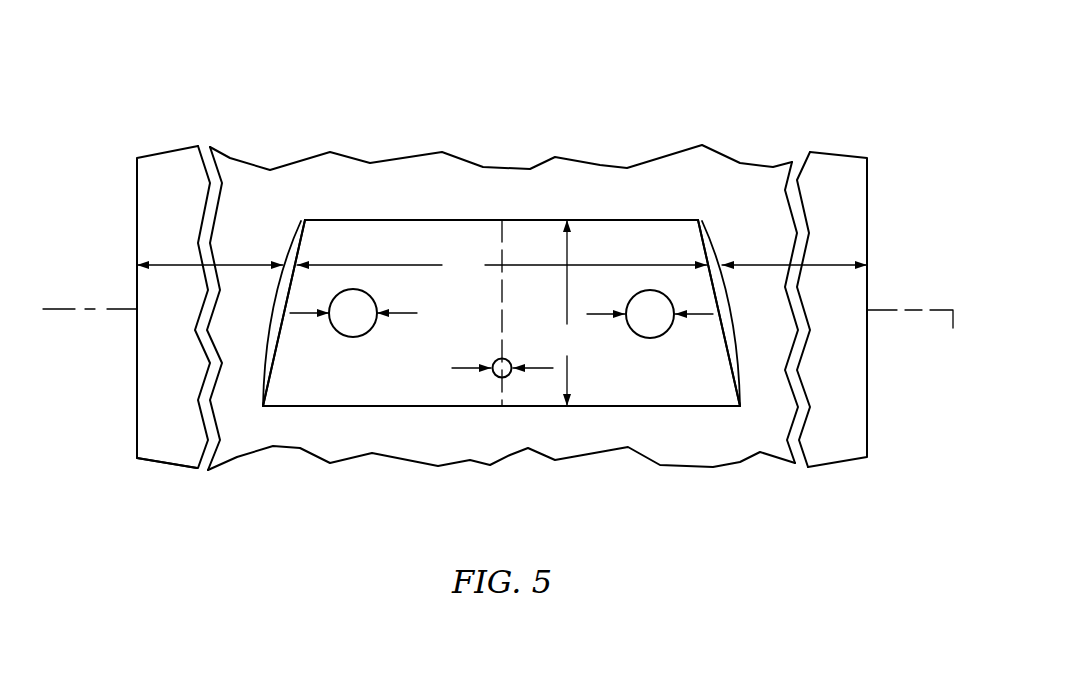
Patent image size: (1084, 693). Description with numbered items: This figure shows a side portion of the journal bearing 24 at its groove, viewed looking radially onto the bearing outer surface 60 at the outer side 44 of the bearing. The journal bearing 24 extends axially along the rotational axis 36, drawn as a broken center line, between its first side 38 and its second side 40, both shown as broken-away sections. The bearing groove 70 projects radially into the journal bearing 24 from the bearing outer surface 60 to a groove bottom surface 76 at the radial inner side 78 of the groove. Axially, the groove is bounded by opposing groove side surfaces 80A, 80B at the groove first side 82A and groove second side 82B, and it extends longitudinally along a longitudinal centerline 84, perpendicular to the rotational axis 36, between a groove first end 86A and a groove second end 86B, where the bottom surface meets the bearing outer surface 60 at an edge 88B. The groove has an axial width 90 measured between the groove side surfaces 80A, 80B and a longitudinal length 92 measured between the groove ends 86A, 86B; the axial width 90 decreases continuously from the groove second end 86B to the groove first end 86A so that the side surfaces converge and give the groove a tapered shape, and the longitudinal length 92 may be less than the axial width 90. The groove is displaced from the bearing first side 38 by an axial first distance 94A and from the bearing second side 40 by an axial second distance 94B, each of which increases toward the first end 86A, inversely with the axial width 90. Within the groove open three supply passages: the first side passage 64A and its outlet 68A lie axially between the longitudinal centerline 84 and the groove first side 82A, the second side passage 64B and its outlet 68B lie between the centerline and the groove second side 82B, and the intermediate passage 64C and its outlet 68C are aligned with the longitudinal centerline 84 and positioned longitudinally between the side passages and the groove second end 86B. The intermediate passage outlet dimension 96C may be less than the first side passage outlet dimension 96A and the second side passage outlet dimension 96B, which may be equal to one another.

The journal bearing 24 is at (840, 110).
The rotational axis 36 is at (953, 336).
The first side of the journal bearing 38 is at (137, 433).
The second side of the journal bearing 40 is at (867, 434).
The outer side of the journal bearing 44 is at (163, 489).
The bearing outer surface 60 is at (169, 450).
The first side passage 64A is at (330, 343).
The second side passage 64B is at (683, 372).
The intermediate passage 64C is at (457, 405).
The first side passage outlet 68A is at (353, 337).
The second side passage outlet 68B is at (655, 338).
The intermediate passage outlet 68C is at (493, 375).
The bearing groove 70 is at (647, 236).
The groove bottom surface 76 is at (501, 202).
The radial inner side of the bearing groove 78 is at (412, 245).
The groove side surface 80A is at (282, 255).
The groove side surface 80B is at (737, 293).
The groove first side 82A is at (292, 262).
The groove second side 82B is at (716, 260).
The longitudinal centerline 84 is at (500, 326).
The groove first end 86A is at (501, 163).
The groove second end 86B is at (533, 218).
The edge 88B is at (543, 407).
The axial width 90 is at (502, 265).
The longitudinal length 92 is at (567, 313).
The axial first distance 94A is at (165, 263).
The axial second distance 94B is at (828, 263).
The first side passage outlet dimension 96A is at (402, 311).
The second side passage outlet dimension 96B is at (600, 315).
The intermediate passage outlet dimension 96C is at (540, 367).